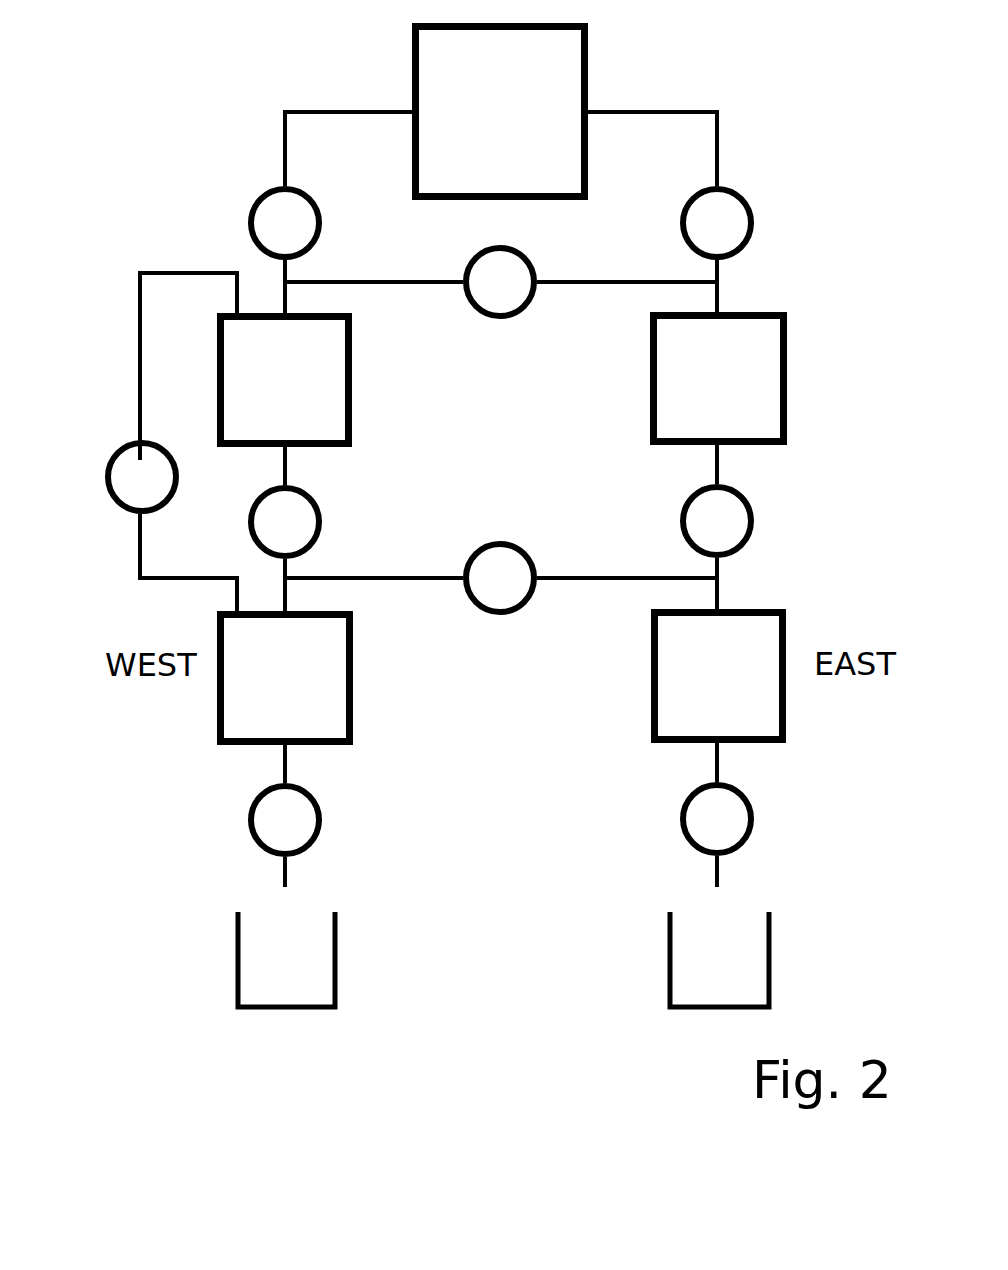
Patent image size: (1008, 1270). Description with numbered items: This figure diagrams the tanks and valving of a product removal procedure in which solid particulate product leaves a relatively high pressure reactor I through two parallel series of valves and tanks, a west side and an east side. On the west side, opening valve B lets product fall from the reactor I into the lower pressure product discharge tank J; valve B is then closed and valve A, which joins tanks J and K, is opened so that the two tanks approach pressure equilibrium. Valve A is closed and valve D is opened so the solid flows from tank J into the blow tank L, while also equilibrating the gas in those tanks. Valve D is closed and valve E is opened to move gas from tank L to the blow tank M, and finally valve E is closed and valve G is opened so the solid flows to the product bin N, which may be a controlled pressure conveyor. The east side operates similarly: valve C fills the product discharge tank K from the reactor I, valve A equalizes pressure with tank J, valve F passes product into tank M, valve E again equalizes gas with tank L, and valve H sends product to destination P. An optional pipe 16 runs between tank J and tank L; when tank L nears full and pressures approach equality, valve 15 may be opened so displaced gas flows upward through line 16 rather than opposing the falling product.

The valve A is at (537, 270).
The valve B is at (320, 222).
The valve C is at (752, 222).
The valve D is at (320, 520).
The valve E is at (537, 568).
The valve F is at (752, 520).
The valve G is at (320, 818).
The valve H is at (752, 818).
The reactor I is at (489, 129).
The product discharge tank J is at (272, 396).
The product discharge tank K is at (703, 395).
The blow tank L is at (273, 694).
The blow tank M is at (702, 692).
The product bin N is at (337, 975).
The destination P is at (668, 975).
The valve 15 is at (120, 506).
The pipe 16 is at (140, 402).